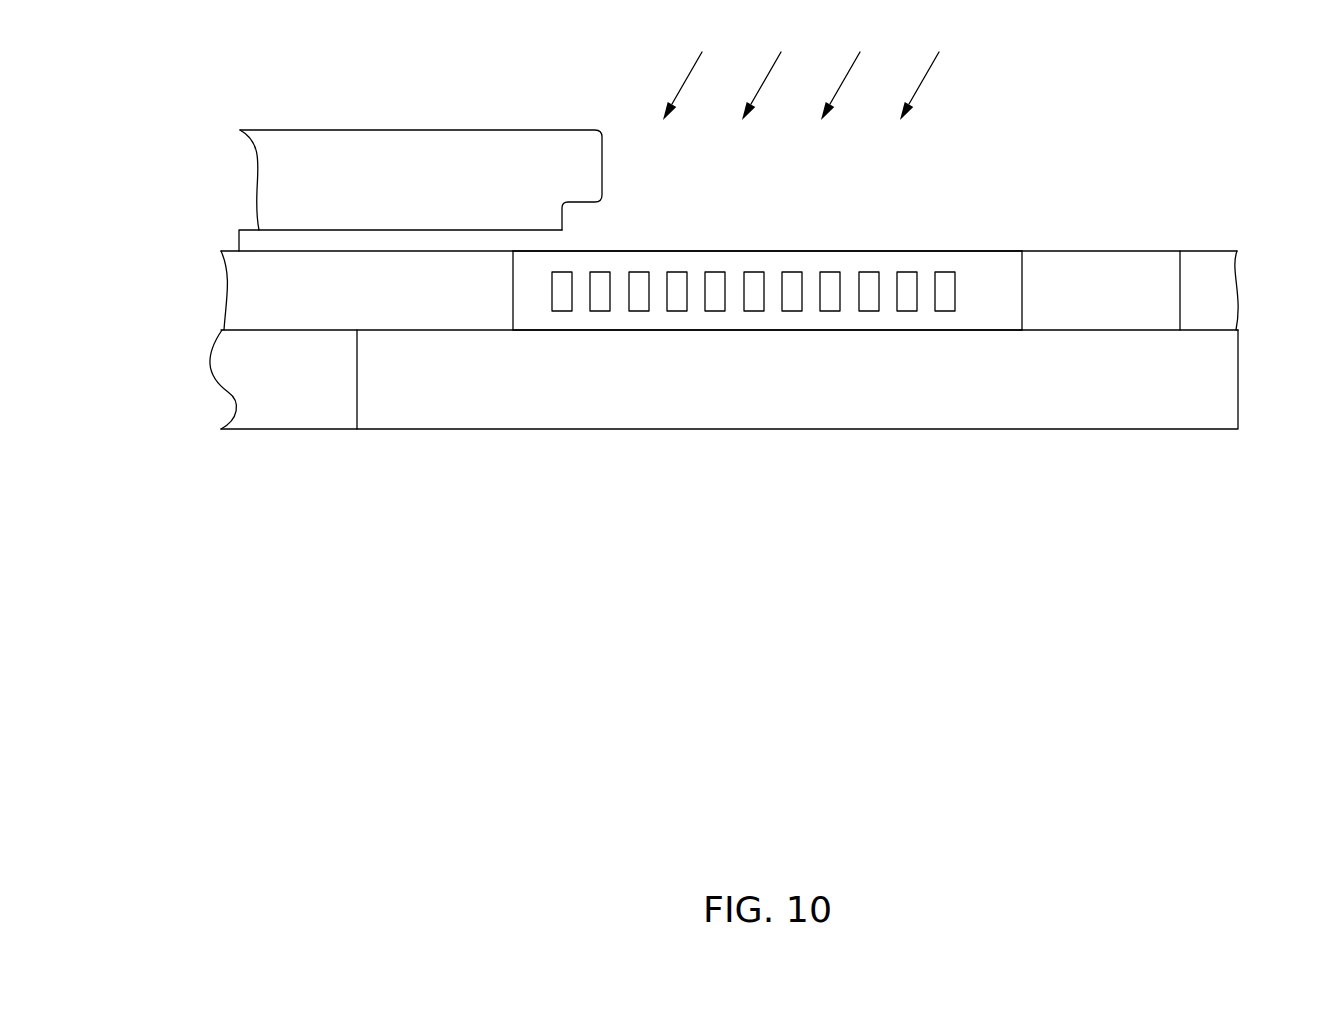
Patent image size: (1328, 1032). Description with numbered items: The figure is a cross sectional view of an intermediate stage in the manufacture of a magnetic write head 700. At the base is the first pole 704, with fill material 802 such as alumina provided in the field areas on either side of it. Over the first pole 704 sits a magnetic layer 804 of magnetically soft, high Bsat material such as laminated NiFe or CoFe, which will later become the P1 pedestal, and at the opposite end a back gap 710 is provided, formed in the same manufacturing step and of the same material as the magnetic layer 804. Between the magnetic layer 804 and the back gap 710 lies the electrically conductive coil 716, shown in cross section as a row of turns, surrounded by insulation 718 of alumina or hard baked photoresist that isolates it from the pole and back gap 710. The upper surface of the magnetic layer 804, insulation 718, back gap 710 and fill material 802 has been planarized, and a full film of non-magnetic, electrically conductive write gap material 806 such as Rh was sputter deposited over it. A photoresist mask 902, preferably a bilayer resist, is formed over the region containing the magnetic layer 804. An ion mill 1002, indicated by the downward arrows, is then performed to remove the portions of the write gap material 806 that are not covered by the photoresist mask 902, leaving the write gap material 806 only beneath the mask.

The magnetic write head 700 is at (1088, 548).
The first pole 704 is at (465, 390).
The back gap 710 is at (1151, 272).
The coil 716 is at (721, 330).
The insulation layer 718 is at (985, 297).
The fill material 802 is at (250, 376).
The magnetic layer 804 is at (242, 300).
The write gap material layer 806 is at (445, 240).
The photoresist mask 902 is at (532, 190).
The ion mill 1002 is at (801, 73).